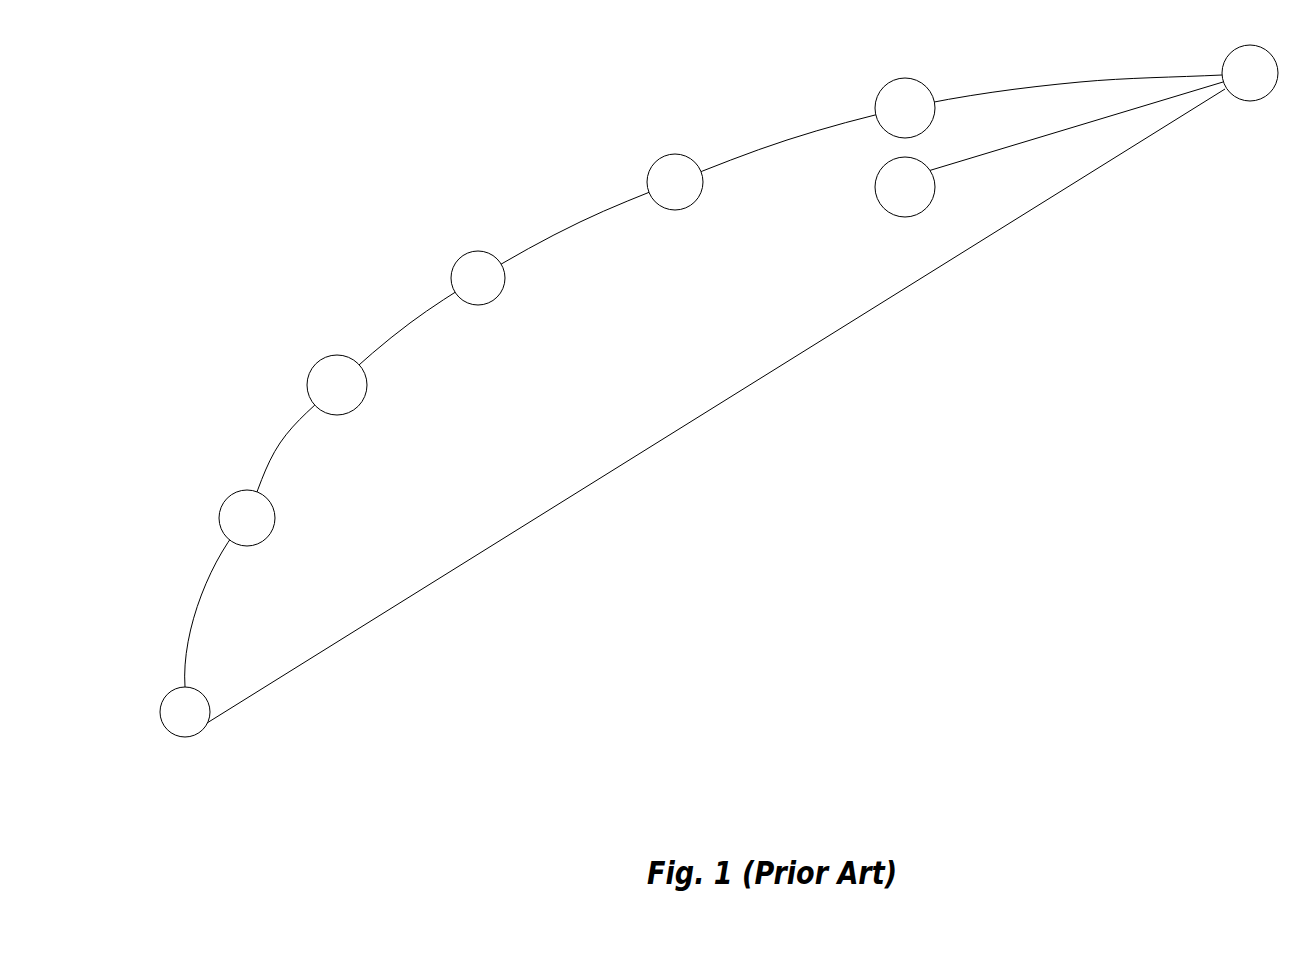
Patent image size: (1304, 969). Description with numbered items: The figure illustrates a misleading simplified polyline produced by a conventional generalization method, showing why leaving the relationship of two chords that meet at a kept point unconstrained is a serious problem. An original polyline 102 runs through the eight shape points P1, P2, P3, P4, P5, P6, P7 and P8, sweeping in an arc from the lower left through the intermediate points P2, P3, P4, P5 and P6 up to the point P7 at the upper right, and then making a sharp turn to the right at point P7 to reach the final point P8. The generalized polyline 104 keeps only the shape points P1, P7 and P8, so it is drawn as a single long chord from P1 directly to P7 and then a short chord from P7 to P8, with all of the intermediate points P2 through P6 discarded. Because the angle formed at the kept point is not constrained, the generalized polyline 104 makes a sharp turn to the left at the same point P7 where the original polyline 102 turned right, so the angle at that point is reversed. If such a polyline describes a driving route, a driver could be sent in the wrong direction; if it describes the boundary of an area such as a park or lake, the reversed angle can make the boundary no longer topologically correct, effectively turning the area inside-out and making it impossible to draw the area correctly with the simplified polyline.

The original polyline 102 is at (532, 190).
The generalized polyline 104 is at (677, 532).
The shape point P1 is at (185, 712).
The shape point P2 is at (247, 518).
The shape point P3 is at (337, 385).
The shape point P4 is at (478, 278).
The shape point P5 is at (675, 182).
The shape point P6 is at (905, 108).
The shape point P7 is at (1250, 73).
The shape point P8 is at (905, 187).